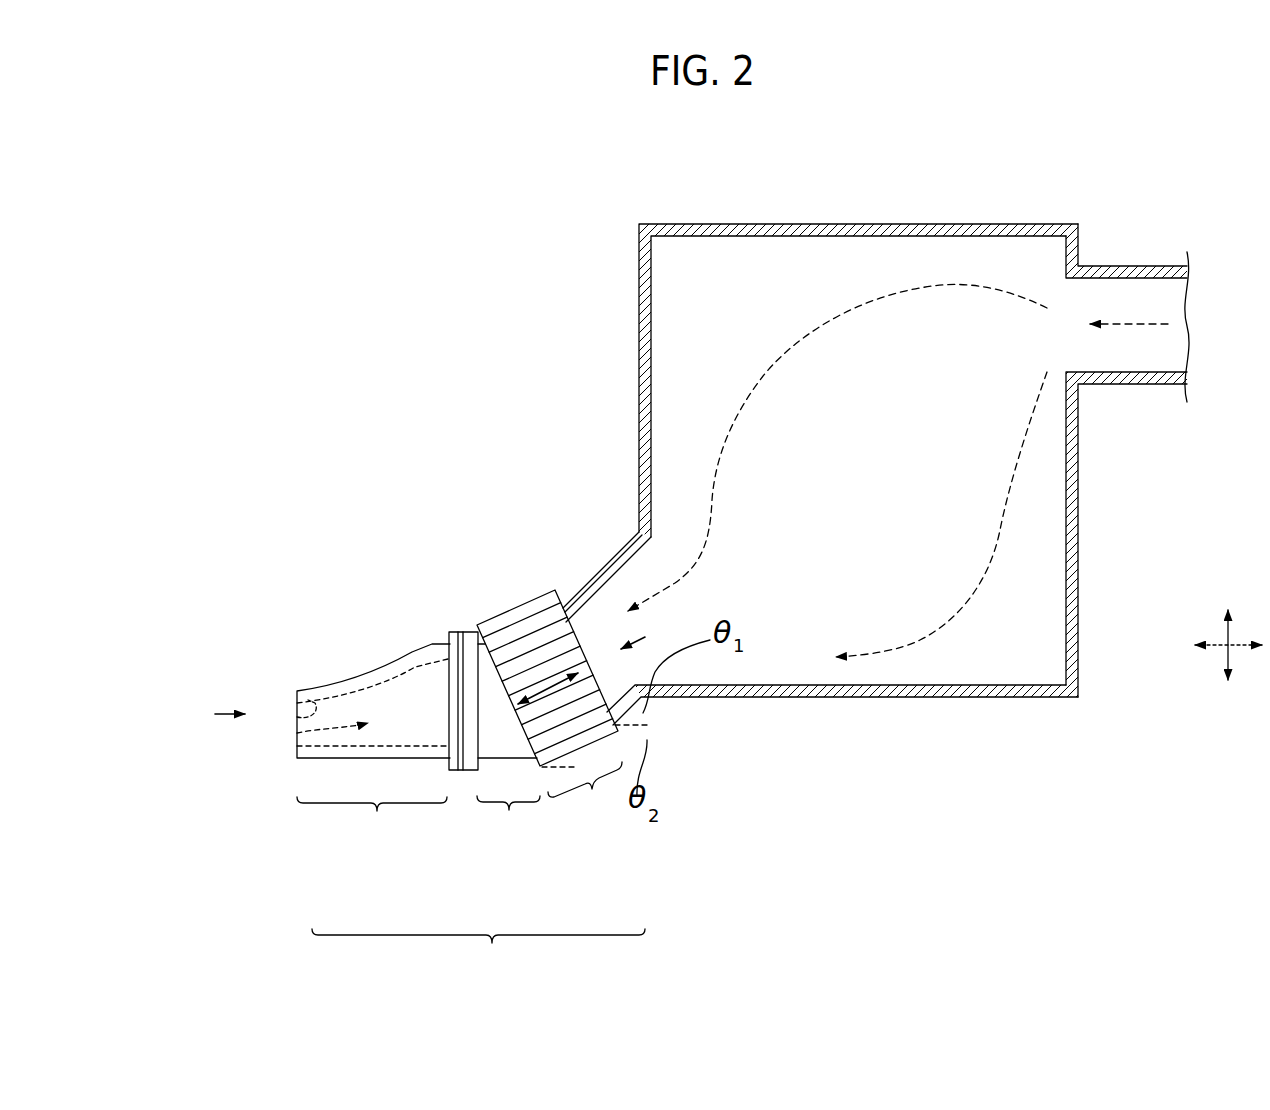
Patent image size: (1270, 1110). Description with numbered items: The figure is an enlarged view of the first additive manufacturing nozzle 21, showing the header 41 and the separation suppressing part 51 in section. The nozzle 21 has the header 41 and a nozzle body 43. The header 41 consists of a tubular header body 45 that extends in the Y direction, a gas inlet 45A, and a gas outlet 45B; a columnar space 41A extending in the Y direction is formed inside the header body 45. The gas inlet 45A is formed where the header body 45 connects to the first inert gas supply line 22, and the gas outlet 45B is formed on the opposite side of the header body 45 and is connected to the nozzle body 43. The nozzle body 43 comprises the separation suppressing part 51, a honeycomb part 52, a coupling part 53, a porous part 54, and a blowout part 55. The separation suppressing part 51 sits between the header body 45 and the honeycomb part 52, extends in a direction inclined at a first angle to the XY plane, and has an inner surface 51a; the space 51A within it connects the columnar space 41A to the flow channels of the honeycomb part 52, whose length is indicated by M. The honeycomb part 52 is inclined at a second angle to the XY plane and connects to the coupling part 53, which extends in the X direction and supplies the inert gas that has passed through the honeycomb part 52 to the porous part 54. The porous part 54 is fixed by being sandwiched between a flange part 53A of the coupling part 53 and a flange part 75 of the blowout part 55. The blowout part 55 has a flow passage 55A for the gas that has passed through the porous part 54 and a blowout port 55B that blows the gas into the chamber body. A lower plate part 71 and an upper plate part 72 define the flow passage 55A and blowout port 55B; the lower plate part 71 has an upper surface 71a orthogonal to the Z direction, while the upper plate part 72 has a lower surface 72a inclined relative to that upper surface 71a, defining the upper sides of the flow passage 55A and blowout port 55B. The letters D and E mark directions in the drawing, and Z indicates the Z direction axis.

The first additive manufacturing nozzle 21 is at (405, 288).
The first inert gas supply line 22 is at (1125, 386).
The header 41 is at (898, 493).
The columnar space 41A is at (1012, 262).
The nozzle body 43 is at (478, 953).
The header body 45 is at (862, 230).
The gas inlet 45A is at (1072, 282).
The gas outlet 45B is at (650, 693).
The separation suppressing part 51 is at (662, 722).
The space 51A is at (590, 633).
The inner surface 51a is at (622, 572).
The honeycomb part 52 is at (592, 789).
The coupling part 53 is at (509, 810).
The flange part 53A is at (472, 638).
The porous part 54 is at (463, 771).
The blowout part 55 is at (377, 811).
The flow passage 55A is at (297, 733).
The blowout port 55B is at (297, 708).
The lower plate part 71 is at (327, 758).
The upper surface 71a is at (297, 747).
The upper plate part 72 is at (410, 653).
The lower surface 72a is at (297, 703).
The flange part 75 is at (455, 702).
The length M is at (548, 683).
The blowing direction D is at (649, 636).
The air flow direction E is at (219, 712).
The vertical axis Z is at (1228, 624).